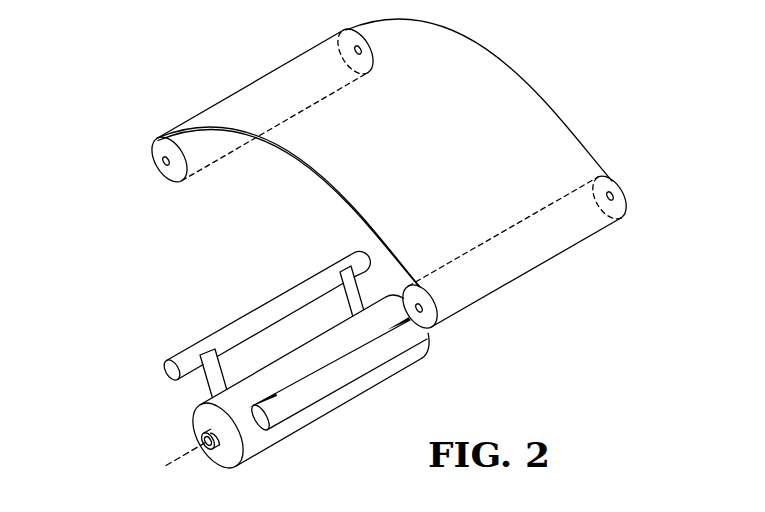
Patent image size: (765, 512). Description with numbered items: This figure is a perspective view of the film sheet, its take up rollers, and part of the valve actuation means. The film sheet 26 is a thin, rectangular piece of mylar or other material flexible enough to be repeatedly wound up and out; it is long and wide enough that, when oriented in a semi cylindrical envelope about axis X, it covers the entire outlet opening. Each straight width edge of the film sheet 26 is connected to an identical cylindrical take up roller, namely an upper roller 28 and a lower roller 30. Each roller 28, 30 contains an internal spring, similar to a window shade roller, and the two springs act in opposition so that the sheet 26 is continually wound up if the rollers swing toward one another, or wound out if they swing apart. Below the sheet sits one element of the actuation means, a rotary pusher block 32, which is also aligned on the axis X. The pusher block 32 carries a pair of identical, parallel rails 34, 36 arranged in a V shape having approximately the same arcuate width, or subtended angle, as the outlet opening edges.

The film sheet 26 is at (488, 72).
The upper roller 28 is at (157, 151).
The lower roller 30 is at (433, 318).
The rotary pusher block 32 is at (254, 446).
The rail 34 is at (187, 362).
The rail 36 is at (347, 371).
The axis X is at (176, 462).